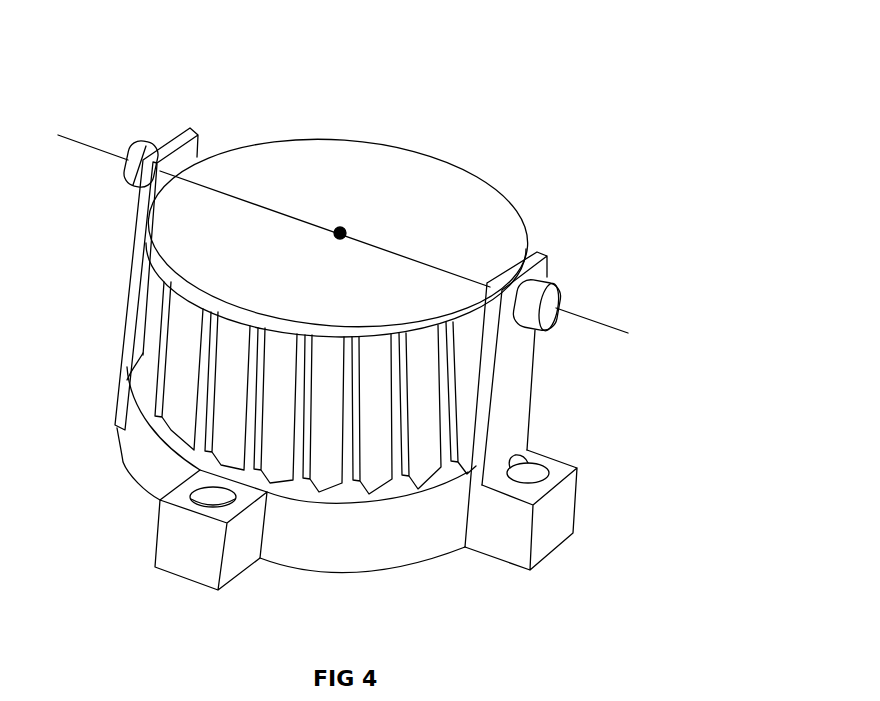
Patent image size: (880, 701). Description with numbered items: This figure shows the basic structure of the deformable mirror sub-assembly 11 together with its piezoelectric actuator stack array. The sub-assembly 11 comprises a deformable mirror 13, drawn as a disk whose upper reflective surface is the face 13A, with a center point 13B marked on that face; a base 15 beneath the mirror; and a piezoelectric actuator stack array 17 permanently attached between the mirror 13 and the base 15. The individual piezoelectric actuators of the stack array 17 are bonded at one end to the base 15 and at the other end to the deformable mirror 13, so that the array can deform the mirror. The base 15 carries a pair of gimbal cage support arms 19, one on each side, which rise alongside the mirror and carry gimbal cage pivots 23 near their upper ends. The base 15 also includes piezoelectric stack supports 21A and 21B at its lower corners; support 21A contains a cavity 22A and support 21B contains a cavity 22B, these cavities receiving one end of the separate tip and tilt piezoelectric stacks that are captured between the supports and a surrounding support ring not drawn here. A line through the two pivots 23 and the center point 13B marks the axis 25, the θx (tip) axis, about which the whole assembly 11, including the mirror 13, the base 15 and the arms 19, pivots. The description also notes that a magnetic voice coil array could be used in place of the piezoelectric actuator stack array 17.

The deformable mirror sub-assembly 11 is at (350, 83).
The deformable mirror 13 is at (450, 215).
The face 13A is at (305, 279).
The center point 13B is at (345, 232).
The base 15 is at (348, 545).
The piezoelectric actuator stack array 17 is at (430, 385).
The gimbal cage support arms 19 is at (137, 282).
The piezoelectric stack support 21A is at (552, 528).
The piezoelectric stack support 21B is at (180, 558).
The cavity 22A is at (530, 476).
The cavity 22B is at (192, 494).
The gimbal cage pivots 23 is at (140, 152).
The axis 25 is at (580, 318).